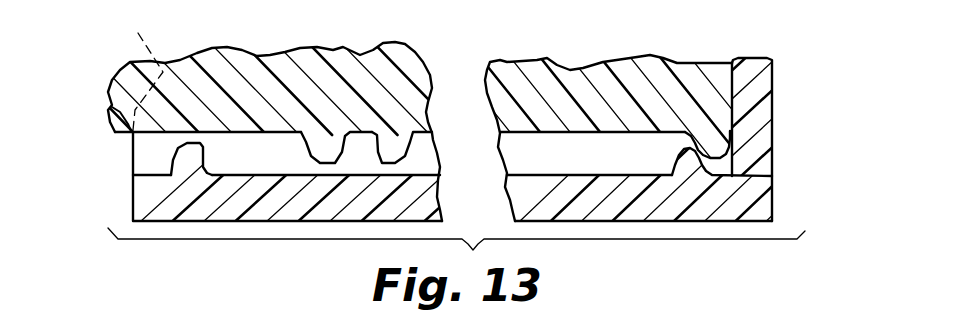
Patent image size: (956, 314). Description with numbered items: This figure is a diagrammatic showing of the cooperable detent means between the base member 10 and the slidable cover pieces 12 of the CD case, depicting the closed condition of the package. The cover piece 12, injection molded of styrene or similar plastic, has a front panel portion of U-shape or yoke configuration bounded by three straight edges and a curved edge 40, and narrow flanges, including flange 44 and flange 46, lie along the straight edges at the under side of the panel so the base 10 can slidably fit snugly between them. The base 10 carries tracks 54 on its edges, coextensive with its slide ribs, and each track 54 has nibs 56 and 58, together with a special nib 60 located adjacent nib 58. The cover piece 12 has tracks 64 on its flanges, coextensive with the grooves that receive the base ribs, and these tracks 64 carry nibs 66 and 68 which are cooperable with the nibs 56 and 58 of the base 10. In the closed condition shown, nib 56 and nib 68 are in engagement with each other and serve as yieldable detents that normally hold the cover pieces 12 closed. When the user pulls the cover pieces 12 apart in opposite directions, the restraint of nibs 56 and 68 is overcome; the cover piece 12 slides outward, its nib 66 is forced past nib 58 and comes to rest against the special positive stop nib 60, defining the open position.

The base member 10 is at (431, 114).
The cover member or piece 12 is at (125, 204).
The curved edge 40 is at (138, 70).
The flange 44 is at (765, 122).
The flange 46 is at (461, 215).
The track 54 is at (262, 133).
The nib 56 is at (726, 150).
The nib 58 is at (328, 135).
The special positive stop nib 60 is at (398, 152).
The track 64 is at (311, 167).
The nib 66 is at (182, 160).
The nib 68 is at (771, 180).